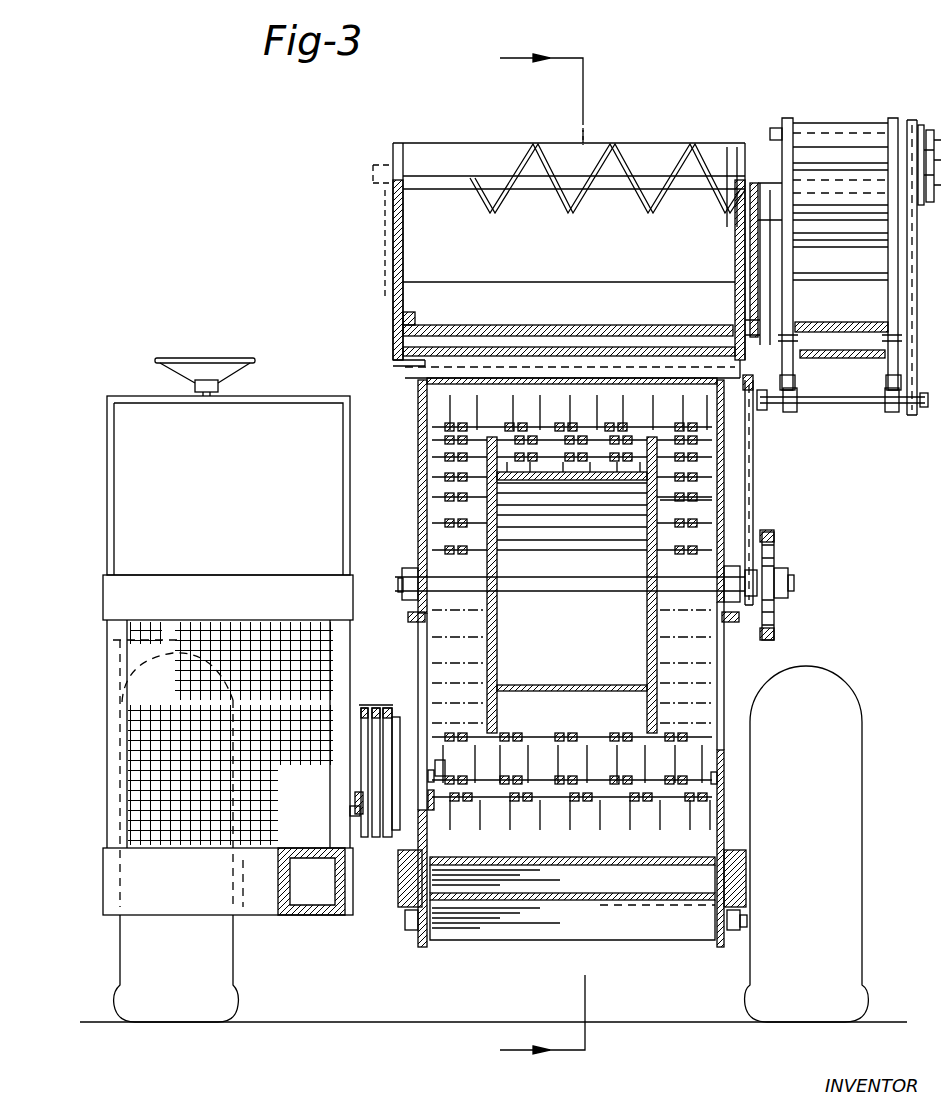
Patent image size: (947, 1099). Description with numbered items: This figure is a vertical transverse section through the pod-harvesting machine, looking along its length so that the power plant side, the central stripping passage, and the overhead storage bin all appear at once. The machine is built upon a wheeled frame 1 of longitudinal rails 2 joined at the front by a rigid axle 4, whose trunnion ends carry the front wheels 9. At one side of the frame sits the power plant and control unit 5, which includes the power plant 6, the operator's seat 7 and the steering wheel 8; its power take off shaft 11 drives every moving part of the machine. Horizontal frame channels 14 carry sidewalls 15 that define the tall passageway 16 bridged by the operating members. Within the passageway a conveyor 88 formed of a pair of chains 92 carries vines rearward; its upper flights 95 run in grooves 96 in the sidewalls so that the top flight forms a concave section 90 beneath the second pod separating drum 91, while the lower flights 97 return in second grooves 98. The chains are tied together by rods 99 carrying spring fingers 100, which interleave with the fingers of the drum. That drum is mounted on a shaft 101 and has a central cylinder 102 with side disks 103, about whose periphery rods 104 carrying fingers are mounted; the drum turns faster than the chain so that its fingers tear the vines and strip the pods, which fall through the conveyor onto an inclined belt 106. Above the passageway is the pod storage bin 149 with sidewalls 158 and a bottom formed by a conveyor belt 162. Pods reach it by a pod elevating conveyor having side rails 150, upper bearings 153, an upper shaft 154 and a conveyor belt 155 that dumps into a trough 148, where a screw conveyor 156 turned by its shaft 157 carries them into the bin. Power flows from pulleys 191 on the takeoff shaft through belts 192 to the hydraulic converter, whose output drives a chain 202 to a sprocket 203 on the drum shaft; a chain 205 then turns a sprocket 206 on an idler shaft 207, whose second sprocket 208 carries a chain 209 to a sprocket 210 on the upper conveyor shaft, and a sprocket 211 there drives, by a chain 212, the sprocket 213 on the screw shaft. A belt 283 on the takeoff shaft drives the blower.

The wheeled frame 1 is at (382, 937).
The longitudinally extending rails 2 is at (398, 883).
The rigid axle 4 is at (540, 52).
The power plant and control unit 5 is at (106, 706).
The power plant 6 is at (133, 652).
The operator's seat 7 is at (278, 398).
The steering wheel 8 is at (222, 358).
The front wheels 9 is at (218, 967).
The power take off shaft 11 is at (355, 812).
The horizontal frame channels 14 is at (425, 545).
The sidewalls 15 is at (425, 455).
The passageway 16 is at (590, 850).
The conveyor 88 is at (723, 813).
The concave section 90 is at (612, 780).
The second pod separating drum 91 is at (677, 512).
The chains 92 is at (432, 778).
The upper flights 95 is at (440, 768).
The grooves 96 is at (430, 748).
The lower flights 97 is at (438, 815).
The second grooves 98 is at (418, 832).
The rods 99 is at (480, 812).
The spring fingers 100 is at (618, 772).
The shaft 101 is at (570, 590).
The central cylinder 102 is at (565, 690).
The side disks 103 is at (560, 630).
The rods 104 is at (425, 435).
The belt 106 is at (642, 860).
The trough 148 is at (766, 250).
The pod storage bin 149 is at (457, 141).
The side rails 150 is at (893, 245).
The bearings 153 is at (773, 133).
The shaft 154 is at (912, 128).
The conveyor belt 155 is at (815, 318).
The screw conveyor 156 is at (658, 210).
The shaft 157 is at (442, 190).
The sidewalls 158 is at (735, 255).
The conveyor belt 162 is at (603, 327).
The pulleys 191 is at (358, 800).
The belts 192 is at (368, 705).
The chain 202 is at (772, 624).
The sprocket 203 is at (778, 550).
The chain 205 is at (755, 445).
The sprocket 206 is at (748, 383).
The idler shaft 207 is at (838, 402).
The second sprocket 208 is at (913, 415).
The chain 209 is at (905, 305).
The sprocket 210 is at (908, 125).
The sprocket 211 is at (930, 128).
The chain 212 is at (902, 172).
The sprocket 213 is at (903, 203).
The belt 283 is at (383, 705).